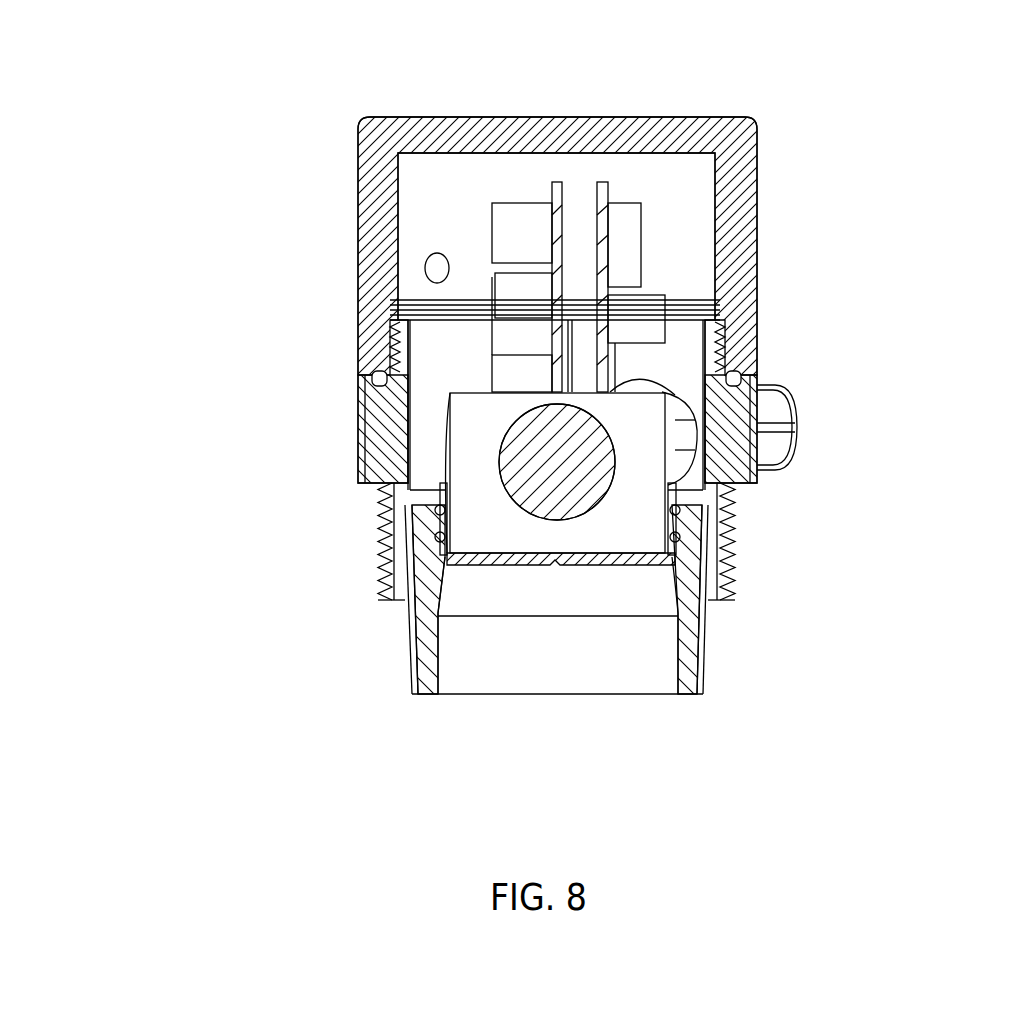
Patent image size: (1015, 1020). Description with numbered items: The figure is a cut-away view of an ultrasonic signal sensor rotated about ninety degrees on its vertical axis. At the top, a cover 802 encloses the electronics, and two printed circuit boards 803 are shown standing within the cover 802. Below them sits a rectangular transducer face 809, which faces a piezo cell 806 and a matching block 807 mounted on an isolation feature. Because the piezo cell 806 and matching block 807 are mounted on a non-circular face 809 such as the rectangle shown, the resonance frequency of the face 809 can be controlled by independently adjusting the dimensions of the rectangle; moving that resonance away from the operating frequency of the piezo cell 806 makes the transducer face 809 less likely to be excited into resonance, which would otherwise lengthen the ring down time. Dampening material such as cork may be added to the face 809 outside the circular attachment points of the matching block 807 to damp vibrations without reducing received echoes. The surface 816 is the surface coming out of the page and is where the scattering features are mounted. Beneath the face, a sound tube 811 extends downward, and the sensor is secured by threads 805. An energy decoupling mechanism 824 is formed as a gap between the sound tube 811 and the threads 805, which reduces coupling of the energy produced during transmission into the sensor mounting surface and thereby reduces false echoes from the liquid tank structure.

The cover 802 is at (376, 180).
The printed circuit boards 803 is at (570, 183).
The threads 805 is at (732, 535).
The piezo cell 806 is at (547, 462).
The matching block 807 is at (557, 462).
The transducer face 809 is at (472, 440).
The sound tube 811 is at (695, 646).
The surface 816 is at (597, 562).
The energy decoupling mechanism 824 is at (405, 600).